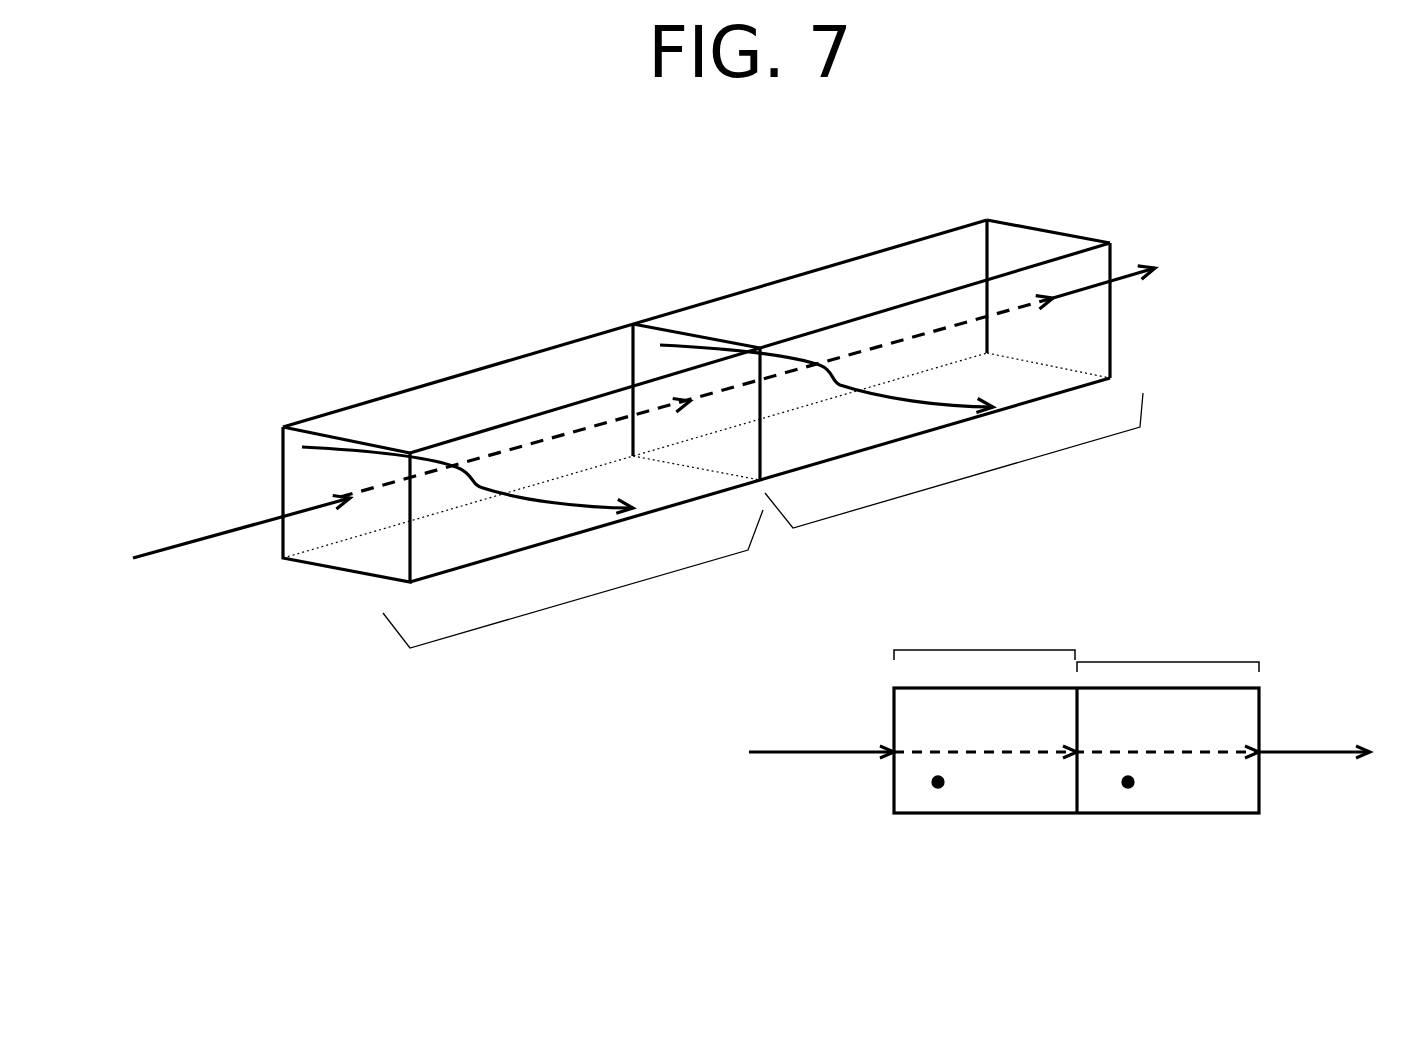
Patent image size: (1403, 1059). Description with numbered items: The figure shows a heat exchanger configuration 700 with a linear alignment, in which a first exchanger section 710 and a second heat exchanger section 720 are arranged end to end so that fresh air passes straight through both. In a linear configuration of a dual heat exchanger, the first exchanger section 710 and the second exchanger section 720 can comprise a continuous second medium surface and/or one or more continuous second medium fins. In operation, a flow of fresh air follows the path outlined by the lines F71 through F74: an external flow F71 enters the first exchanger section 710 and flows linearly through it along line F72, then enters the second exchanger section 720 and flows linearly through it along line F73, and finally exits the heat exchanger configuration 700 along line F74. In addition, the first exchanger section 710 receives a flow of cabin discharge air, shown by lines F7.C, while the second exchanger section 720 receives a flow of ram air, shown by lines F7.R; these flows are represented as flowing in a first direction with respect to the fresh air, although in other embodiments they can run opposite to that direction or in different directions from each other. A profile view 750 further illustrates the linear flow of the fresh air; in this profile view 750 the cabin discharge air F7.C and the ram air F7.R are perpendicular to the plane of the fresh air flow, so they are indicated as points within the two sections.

The heat exchanger configuration 700 is at (460, 193).
The first exchanger section 710 is at (590, 612).
The second heat exchanger section 720 is at (1110, 440).
The profile view 750 is at (810, 813).
The external flow line F71 is at (222, 532).
The flow line through first exchanger section F72 is at (472, 462).
The flow line through second exchanger section F73 is at (925, 330).
The exit flow line F74 is at (1125, 265).
The cabin discharge air flow lines F7.C is at (460, 467).
The ram air flow lines F7.R is at (957, 398).